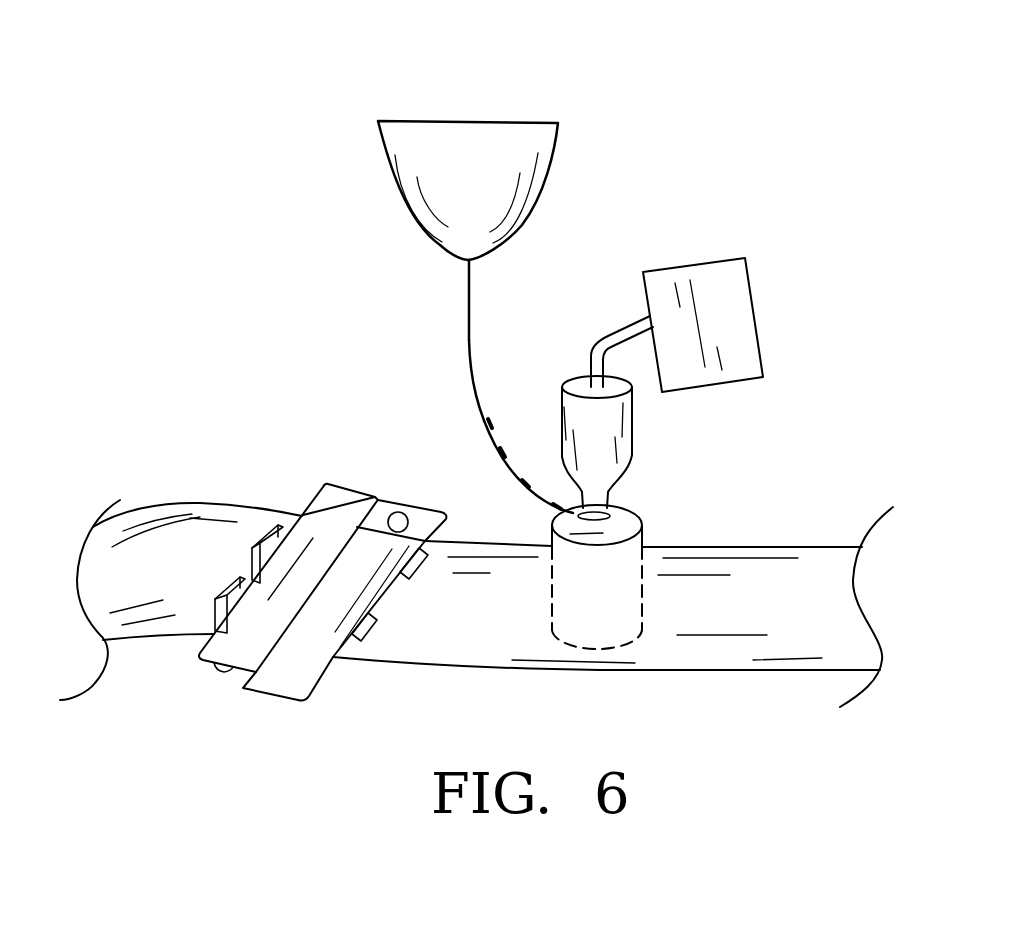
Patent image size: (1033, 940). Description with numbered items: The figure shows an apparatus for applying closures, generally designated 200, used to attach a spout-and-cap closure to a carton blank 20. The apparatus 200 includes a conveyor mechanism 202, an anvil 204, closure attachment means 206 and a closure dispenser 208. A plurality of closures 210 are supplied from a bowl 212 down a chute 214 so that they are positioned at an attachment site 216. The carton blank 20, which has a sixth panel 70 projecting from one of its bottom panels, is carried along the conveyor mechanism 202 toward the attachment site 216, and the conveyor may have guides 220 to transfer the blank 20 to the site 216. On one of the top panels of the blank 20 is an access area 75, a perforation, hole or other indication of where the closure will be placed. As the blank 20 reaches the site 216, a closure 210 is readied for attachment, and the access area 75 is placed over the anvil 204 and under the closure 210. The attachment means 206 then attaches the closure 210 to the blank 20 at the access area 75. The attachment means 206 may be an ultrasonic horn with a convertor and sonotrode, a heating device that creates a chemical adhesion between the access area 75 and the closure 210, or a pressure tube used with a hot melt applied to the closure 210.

The carton blank 20 is at (220, 542).
The sixth panel 70 is at (223, 670).
The access area 75 is at (398, 522).
The apparatus for applying closures 200 is at (700, 135).
The conveyor mechanism 202 is at (702, 648).
The anvil 204 is at (640, 524).
The closure attachment means 206 is at (632, 440).
The closure dispenser 208 is at (423, 152).
The closures 210 is at (488, 420).
The bowl 212 is at (542, 143).
The chute 214 is at (467, 348).
The attachment site 216 is at (608, 509).
The guides 220 is at (262, 530).